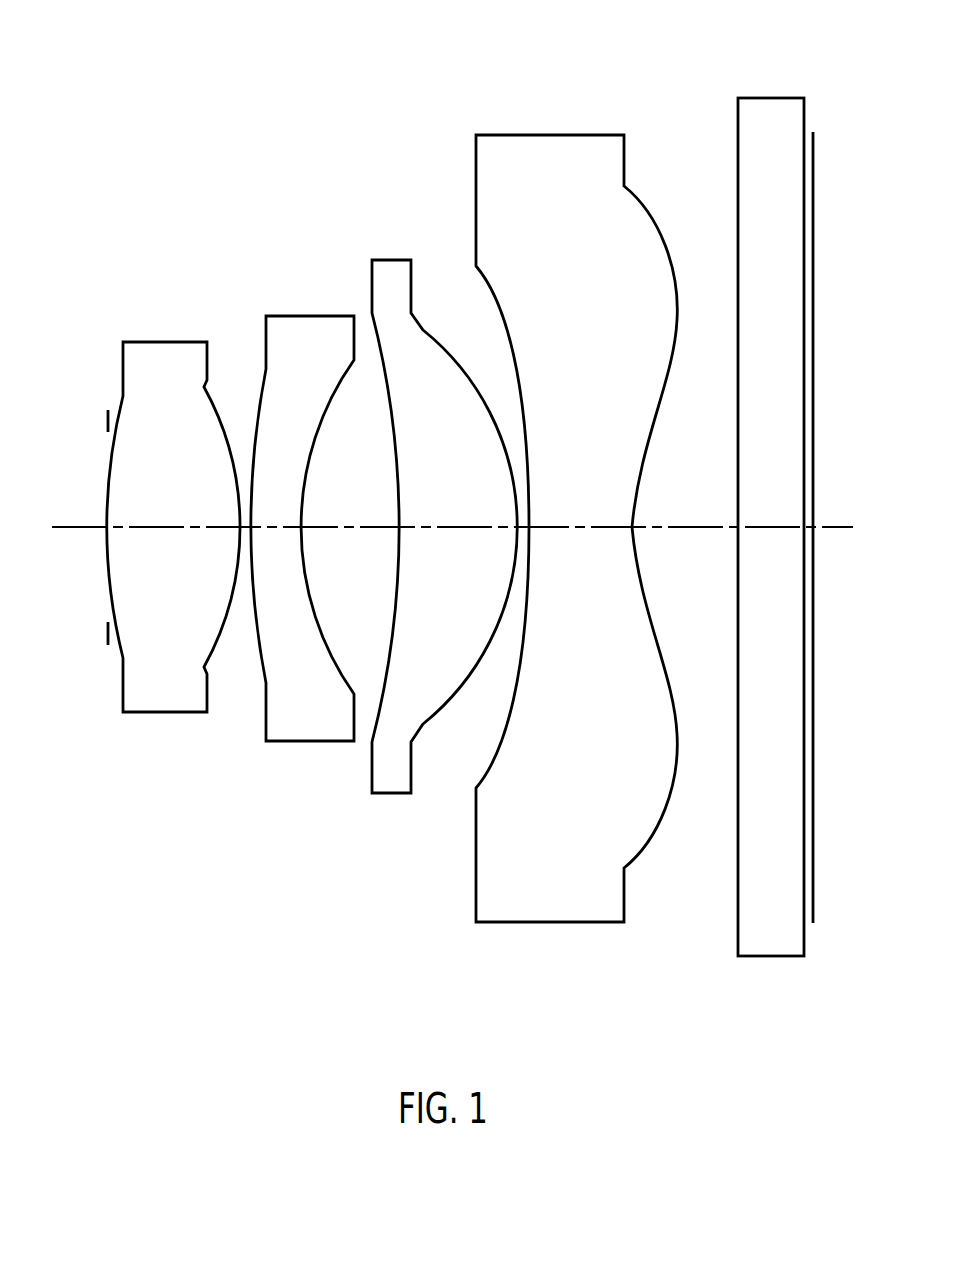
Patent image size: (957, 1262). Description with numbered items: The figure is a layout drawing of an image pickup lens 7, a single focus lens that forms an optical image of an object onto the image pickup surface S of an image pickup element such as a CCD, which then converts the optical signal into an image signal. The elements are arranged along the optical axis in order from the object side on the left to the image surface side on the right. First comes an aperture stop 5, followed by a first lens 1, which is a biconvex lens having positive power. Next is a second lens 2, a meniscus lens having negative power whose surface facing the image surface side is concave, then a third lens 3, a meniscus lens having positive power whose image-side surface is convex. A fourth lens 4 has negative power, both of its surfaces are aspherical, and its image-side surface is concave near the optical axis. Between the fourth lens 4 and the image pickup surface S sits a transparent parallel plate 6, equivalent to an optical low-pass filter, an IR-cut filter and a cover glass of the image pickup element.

The first lens 1 is at (163, 341).
The second lens 2 is at (310, 316).
The third lens 3 is at (389, 260).
The fourth lens 4 is at (549, 135).
The aperture stop 5 is at (105, 422).
The parallel plate 6 is at (770, 98).
The image pickup lens 7 is at (287, 109).
The image pickup surface S is at (816, 193).